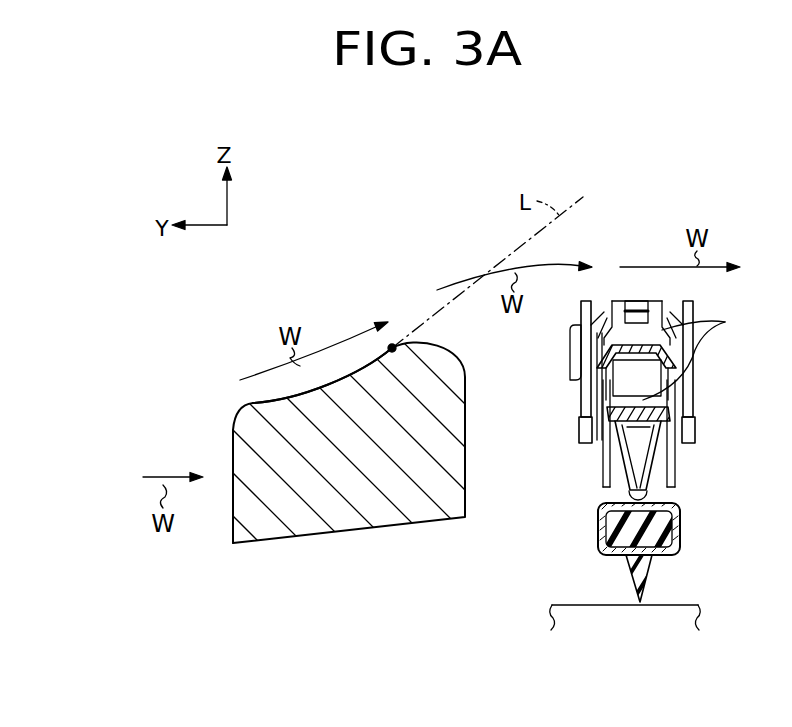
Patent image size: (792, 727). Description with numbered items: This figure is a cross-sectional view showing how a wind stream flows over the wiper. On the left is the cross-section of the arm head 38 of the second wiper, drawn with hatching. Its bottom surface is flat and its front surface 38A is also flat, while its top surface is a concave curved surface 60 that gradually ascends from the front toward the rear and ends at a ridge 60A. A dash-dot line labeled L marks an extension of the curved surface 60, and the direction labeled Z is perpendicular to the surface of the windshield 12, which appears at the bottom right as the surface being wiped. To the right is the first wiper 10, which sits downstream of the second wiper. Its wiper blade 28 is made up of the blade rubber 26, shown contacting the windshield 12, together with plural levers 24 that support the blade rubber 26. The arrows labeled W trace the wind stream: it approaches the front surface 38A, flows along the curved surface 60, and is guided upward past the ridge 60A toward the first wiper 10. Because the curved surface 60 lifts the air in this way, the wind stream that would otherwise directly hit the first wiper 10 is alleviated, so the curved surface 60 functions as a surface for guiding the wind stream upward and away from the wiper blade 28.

The first wiper 10 is at (622, 226).
The windshield 12 is at (563, 602).
The levers 24 is at (725, 322).
The blade rubber 26 is at (648, 583).
The wiper blade 28 is at (704, 473).
The arm head 38 is at (469, 448).
The front surface 38A is at (231, 440).
The curved surface 60 is at (252, 400).
The ridge 60A is at (393, 344).